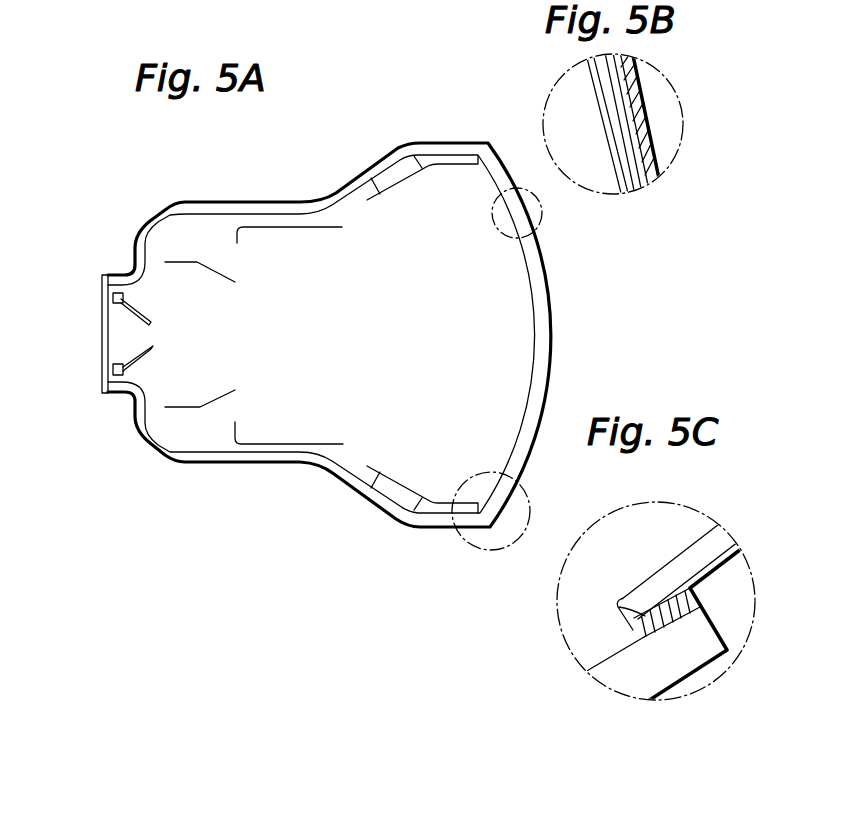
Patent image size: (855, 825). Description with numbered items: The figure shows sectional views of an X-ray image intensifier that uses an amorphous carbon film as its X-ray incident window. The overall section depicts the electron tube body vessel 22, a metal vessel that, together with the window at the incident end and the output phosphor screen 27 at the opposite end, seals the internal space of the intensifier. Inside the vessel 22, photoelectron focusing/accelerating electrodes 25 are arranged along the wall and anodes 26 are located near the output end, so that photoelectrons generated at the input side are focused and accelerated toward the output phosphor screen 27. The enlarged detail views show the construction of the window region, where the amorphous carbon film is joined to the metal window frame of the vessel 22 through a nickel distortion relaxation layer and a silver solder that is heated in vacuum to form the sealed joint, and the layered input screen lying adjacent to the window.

The electron tube body vessel 22 is at (417, 530).
The photoelectron focusing/accelerating electrodes 25 is at (178, 260).
The anodes 26 is at (130, 318).
The output phosphor screen 27 is at (102, 355).